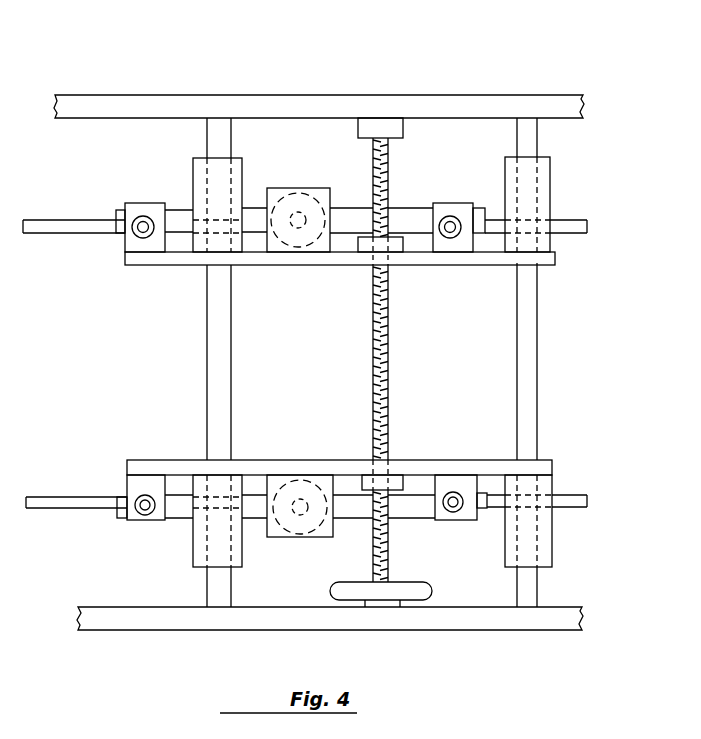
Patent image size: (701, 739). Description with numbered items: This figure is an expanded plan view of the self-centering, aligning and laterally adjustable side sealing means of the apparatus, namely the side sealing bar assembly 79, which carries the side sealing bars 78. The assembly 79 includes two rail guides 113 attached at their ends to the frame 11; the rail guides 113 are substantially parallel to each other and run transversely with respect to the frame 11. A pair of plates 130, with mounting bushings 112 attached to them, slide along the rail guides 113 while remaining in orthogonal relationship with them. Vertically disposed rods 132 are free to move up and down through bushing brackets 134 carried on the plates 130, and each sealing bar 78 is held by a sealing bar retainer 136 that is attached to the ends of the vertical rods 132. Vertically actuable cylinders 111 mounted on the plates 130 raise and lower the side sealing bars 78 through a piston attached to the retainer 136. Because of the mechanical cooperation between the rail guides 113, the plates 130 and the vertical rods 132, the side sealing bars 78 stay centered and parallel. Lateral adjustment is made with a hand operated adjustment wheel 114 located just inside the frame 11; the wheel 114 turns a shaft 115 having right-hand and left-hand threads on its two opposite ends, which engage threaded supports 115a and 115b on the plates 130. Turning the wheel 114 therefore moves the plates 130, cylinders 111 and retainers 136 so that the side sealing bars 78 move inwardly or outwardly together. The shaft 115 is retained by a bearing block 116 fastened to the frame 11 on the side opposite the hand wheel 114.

The side sealing bar assembly 79 is at (229, 82).
The frame 11 is at (328, 100).
The side sealing bars 78 is at (72, 234).
The vertically actuable cylinders 111 is at (307, 197).
The mounting bushings 112 is at (200, 185).
The rail guides 113 is at (215, 328).
The hand operated adjustment wheel 114 is at (408, 588).
The shaft 115 is at (392, 325).
The threaded support 115a is at (363, 258).
The threaded support 115b is at (370, 478).
The bearing block 116 is at (390, 130).
The plates 130 is at (283, 260).
The vertical rods 132 is at (143, 232).
The bearing block 134 is at (133, 207).
The sealing bar retainer 136 is at (347, 215).